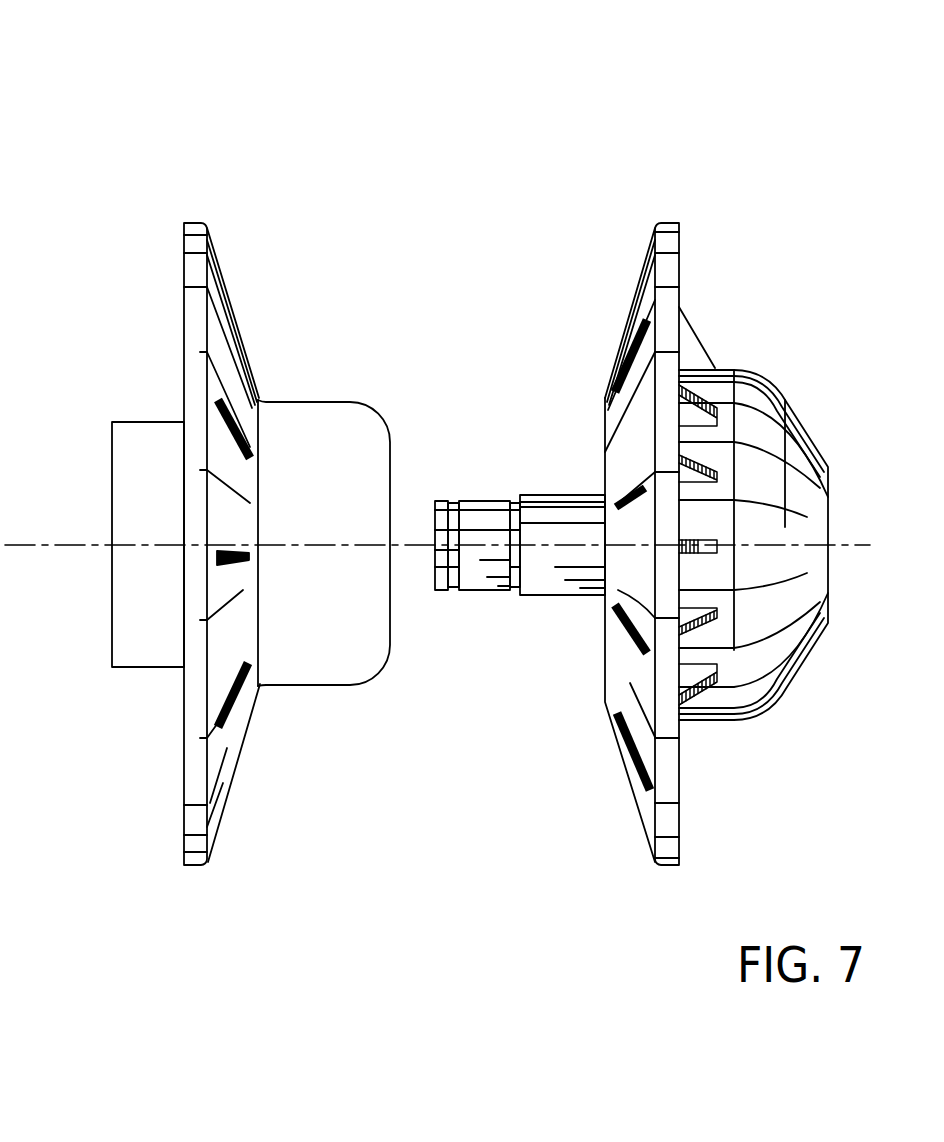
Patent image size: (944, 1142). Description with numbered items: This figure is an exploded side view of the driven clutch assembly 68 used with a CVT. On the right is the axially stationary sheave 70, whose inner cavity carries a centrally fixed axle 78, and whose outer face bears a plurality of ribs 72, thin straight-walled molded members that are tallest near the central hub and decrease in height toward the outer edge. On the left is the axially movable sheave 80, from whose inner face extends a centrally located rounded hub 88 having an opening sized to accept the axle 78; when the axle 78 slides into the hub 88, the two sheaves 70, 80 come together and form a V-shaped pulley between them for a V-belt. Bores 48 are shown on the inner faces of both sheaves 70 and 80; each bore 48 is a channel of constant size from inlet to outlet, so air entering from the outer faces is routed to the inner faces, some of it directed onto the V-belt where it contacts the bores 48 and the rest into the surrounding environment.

The driven clutch assembly 68 is at (463, 96).
The axially stationary sheave 70 is at (681, 262).
The ribs 72 is at (700, 686).
The axle 78 is at (485, 500).
The axially movable sheave 80 is at (183, 291).
The rounded hub 88 is at (342, 402).
The bores 48 is at (237, 693).